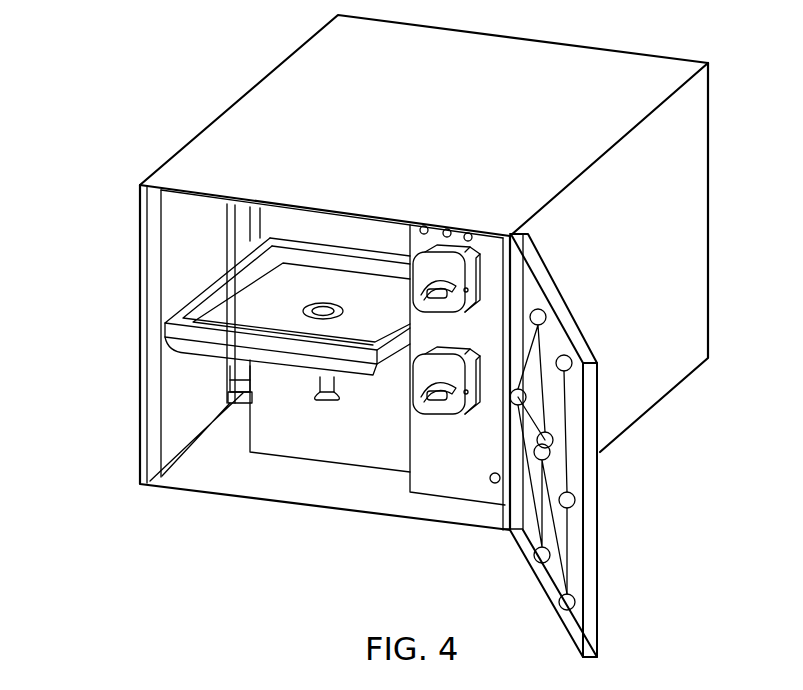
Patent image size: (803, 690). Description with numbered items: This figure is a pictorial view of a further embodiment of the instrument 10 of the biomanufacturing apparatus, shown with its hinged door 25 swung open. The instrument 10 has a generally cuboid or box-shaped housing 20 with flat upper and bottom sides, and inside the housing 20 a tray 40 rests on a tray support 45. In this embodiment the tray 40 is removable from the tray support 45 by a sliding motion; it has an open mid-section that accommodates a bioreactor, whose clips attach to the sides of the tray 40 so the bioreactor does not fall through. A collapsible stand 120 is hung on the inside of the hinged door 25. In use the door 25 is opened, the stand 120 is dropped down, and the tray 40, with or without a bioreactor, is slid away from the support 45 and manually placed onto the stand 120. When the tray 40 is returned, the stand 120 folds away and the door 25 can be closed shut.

The instrument 10 is at (180, 50).
The housing 20 is at (170, 156).
The door 25 is at (600, 607).
The tray 40 is at (178, 334).
The tray support 45 is at (268, 390).
The collapsible stand 120 is at (530, 553).